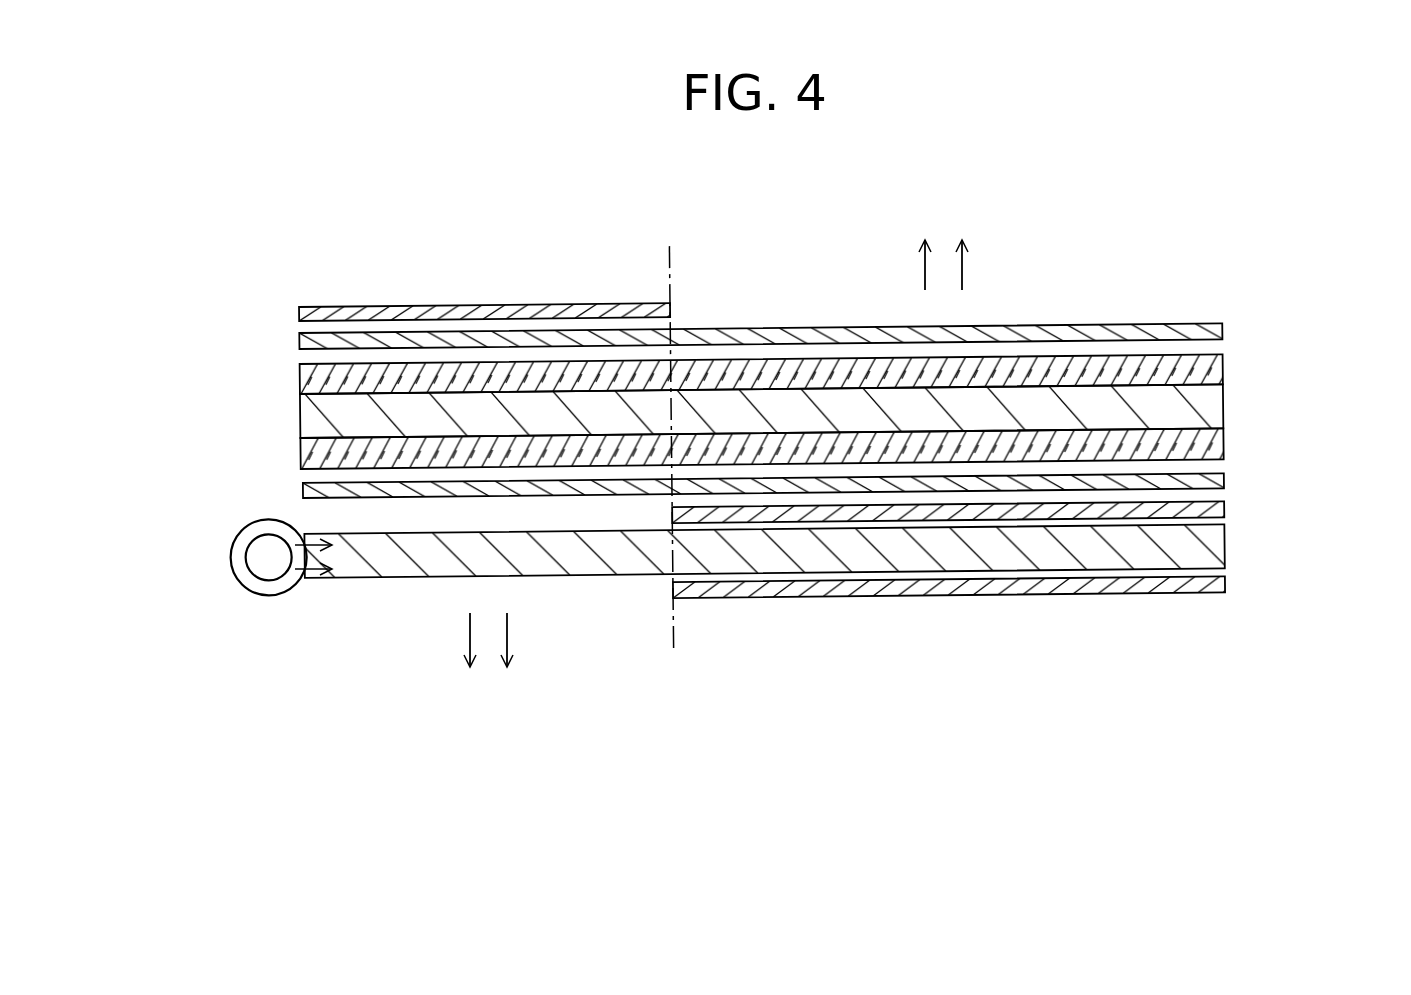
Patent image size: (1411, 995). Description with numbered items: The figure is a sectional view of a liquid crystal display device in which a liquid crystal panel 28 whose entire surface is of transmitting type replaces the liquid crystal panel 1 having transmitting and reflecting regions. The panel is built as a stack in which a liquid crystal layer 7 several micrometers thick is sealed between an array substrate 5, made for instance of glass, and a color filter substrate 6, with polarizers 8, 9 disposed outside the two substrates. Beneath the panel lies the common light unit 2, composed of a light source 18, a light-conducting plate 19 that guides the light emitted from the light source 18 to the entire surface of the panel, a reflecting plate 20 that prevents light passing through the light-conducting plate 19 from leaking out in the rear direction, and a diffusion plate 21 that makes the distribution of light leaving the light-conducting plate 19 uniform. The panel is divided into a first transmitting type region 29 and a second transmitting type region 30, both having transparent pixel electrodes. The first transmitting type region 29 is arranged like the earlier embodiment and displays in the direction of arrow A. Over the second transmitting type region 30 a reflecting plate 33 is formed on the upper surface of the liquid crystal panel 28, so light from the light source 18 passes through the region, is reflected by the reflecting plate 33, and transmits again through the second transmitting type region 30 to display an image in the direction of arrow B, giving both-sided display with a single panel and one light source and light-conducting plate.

The liquid crystal panel 1 is at (684, 379).
The common light unit 2 is at (229, 620).
The array substrate 5 is at (327, 380).
The color filter substrate 6 is at (310, 455).
The liquid crystal layer 7 is at (310, 415).
The polarizer 8 is at (312, 492).
The polarizer 9 is at (353, 342).
The light source 18 is at (268, 568).
The light-conducting plate 19 is at (397, 568).
The reflecting plate 20 is at (1185, 585).
The diffusion plate 21 is at (1207, 513).
The liquid crystal panel 28 is at (1263, 403).
The first transmitting type region 29 is at (1025, 277).
The second transmitting type region 30 is at (597, 628).
The reflecting plate 33 is at (405, 313).
The arrow A is at (922, 273).
The arrow B is at (510, 630).